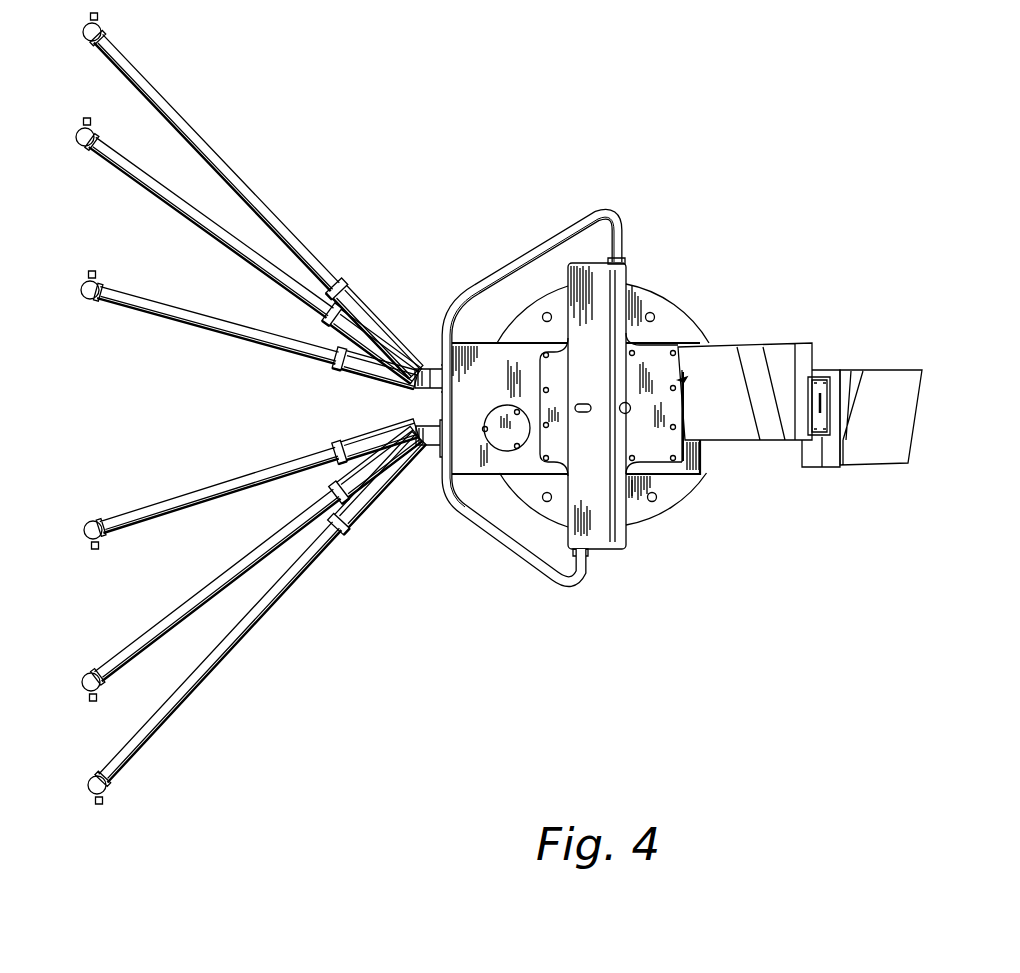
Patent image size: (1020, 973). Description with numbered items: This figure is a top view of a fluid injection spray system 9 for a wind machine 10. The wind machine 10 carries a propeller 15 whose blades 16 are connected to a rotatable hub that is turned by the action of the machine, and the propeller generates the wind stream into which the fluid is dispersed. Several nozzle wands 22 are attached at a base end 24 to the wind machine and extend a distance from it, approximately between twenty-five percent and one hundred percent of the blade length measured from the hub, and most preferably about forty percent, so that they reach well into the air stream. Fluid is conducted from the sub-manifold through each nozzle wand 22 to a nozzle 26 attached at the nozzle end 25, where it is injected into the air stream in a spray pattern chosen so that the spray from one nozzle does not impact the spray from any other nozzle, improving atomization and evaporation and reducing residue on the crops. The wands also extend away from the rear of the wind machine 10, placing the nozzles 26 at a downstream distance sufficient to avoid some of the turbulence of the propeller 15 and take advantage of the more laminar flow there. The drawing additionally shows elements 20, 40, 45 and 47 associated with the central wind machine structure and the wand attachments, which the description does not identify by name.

The fluid injection system 9 is at (357, 682).
The wind machine 10 is at (715, 175).
The propeller 15 is at (802, 333).
The blades 16 is at (720, 360).
The arm assembly 20 is at (356, 118).
The nozzle wand 22 is at (162, 100).
The base end 24 is at (427, 456).
The nozzle end 25 is at (229, 514).
The nozzle 26 is at (94, 551).
The tube 40 is at (622, 262).
The center column 45 is at (597, 535).
The upper arm connector 47 is at (425, 386).